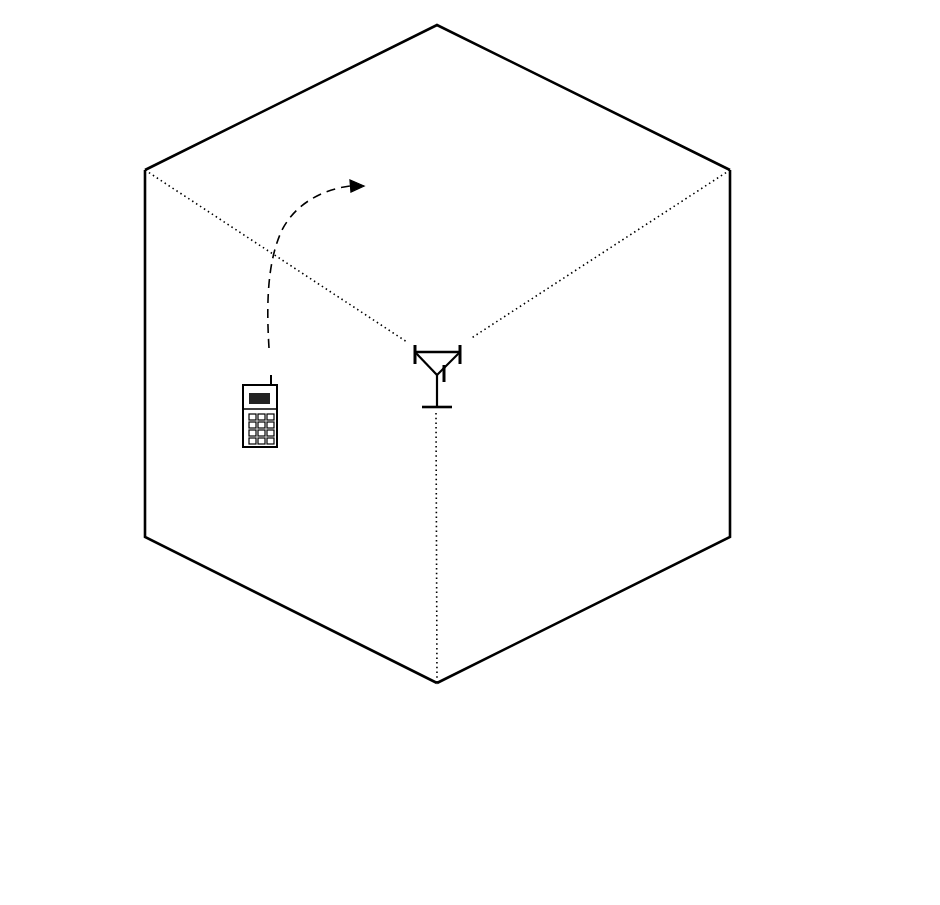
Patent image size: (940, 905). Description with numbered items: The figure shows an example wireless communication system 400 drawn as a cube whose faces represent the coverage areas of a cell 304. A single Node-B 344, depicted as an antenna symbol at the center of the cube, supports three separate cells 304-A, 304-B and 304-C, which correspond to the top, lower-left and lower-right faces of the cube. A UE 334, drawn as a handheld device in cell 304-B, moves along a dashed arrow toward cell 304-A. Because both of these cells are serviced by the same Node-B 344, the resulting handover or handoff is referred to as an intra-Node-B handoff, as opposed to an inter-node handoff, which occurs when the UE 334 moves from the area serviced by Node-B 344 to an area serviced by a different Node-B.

The wireless communication system 400 is at (804, 93).
The cell 304 is at (283, 100).
The cell 304-A is at (460, 77).
The cell 304-B is at (208, 530).
The cell 304-C is at (710, 530).
The UE 334 is at (252, 385).
The Node-B 344 is at (426, 352).